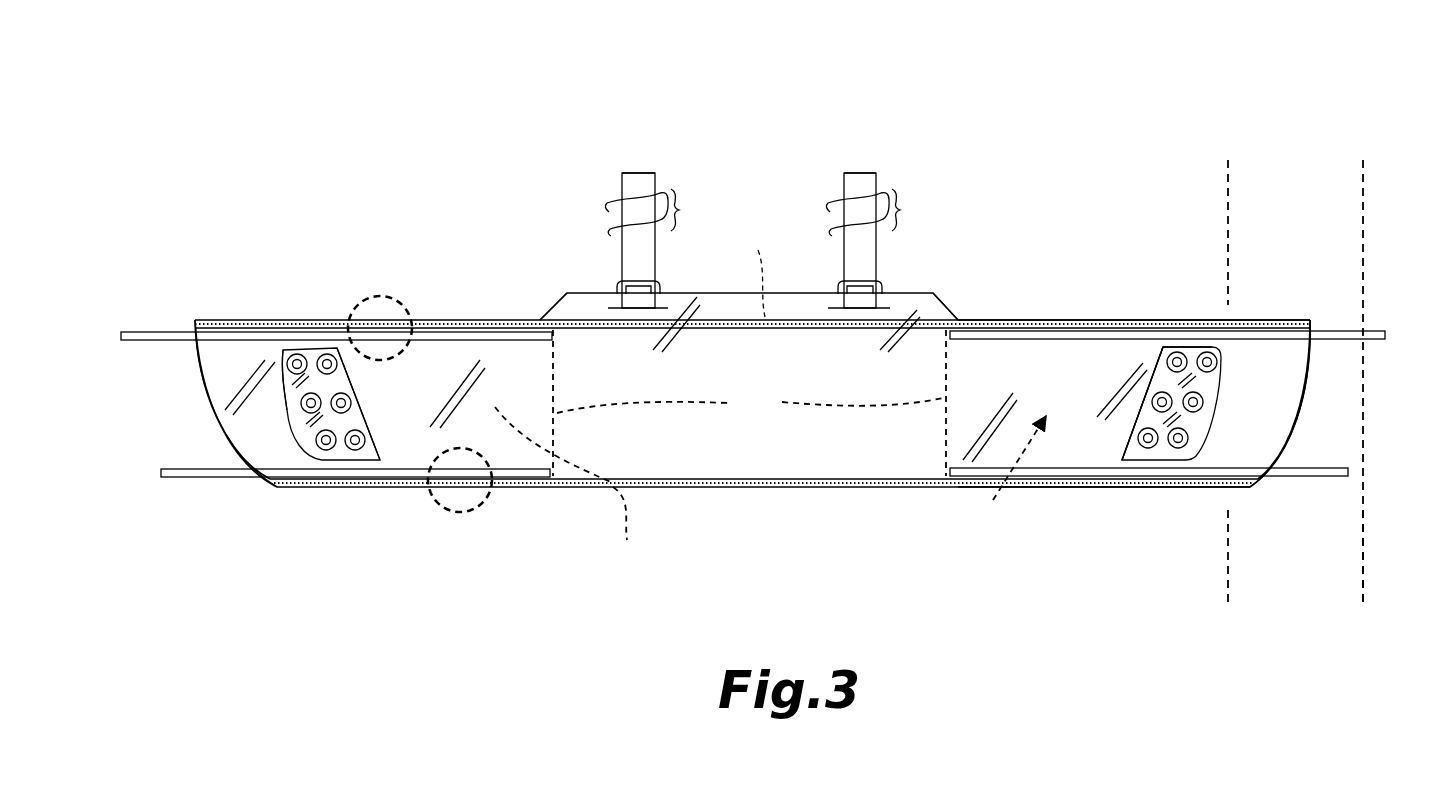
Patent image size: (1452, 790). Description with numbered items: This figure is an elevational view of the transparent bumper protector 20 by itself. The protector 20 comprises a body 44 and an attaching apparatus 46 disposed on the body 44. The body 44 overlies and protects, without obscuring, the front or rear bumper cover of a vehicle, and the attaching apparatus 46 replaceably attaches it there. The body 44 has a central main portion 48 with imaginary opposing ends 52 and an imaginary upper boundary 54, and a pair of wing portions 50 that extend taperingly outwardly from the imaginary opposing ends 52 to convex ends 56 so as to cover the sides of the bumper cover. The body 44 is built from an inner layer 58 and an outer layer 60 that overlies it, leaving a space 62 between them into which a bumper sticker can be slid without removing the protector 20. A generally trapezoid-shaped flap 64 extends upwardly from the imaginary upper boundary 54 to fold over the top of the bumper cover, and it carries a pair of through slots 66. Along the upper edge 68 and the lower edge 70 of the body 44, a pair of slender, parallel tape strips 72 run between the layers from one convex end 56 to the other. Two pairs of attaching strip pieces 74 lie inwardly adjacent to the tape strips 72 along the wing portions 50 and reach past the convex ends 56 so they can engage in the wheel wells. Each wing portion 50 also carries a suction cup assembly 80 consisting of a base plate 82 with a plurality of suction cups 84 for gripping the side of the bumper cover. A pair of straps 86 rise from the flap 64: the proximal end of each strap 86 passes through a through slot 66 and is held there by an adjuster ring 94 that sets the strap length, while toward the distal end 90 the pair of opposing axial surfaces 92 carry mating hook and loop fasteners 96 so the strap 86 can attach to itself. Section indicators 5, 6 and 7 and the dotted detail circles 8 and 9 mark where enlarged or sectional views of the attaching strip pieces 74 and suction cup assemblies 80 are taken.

The protector 20 is at (303, 226).
The body 44 is at (760, 442).
The attaching apparatus 46 is at (177, 328).
The main portion 48 is at (688, 438).
The wing portions 50 is at (512, 372).
The imaginary opposing ends 52 is at (750, 409).
The imaginary upper boundary 54 is at (760, 268).
The convex ends 56 is at (213, 423).
The inner layer 58 is at (1003, 491).
The outer layer 60 is at (1102, 451).
The space 62 is at (567, 496).
The flap 64 is at (599, 289).
The through slots 66 is at (833, 297).
The upper edge 68 is at (1087, 317).
The lower edge 70 is at (1198, 490).
The tape strips 72 is at (837, 332).
The attaching strip pieces 74 is at (177, 348).
The suction cup assemblies 80 is at (291, 426).
The base plate 82 is at (367, 453).
The suction cups 84 is at (330, 350).
The straps 86 is at (616, 250).
The distal end 90 is at (637, 190).
The opposing axial surfaces 92 is at (641, 248).
The hook and loop fasteners 96 is at (878, 240).
The adjuster ring 94 is at (628, 304).
The section line 7 is at (1225, 235).
The section line 5 is at (1360, 235).
The section line 6 is at (1360, 543).
The detail circle 8 is at (492, 508).
The detail circle 9 is at (402, 297).